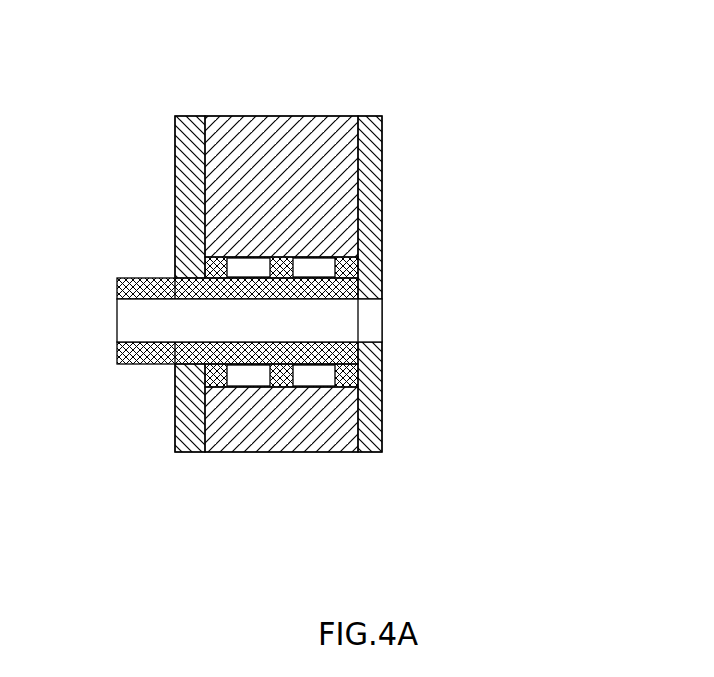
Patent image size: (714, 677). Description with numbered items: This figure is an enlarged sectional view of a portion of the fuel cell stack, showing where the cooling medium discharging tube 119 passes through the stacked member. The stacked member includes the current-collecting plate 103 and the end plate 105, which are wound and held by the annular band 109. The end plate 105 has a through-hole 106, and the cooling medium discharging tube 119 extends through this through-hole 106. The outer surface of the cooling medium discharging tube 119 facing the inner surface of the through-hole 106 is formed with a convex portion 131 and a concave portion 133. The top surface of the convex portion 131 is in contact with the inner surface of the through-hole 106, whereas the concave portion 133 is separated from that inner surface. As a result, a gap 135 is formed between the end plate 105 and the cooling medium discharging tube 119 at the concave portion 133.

The current-collecting plate 103 is at (283, 230).
The end plate 105 is at (351, 186).
The through-hole 106 is at (281, 467).
The annular band 109 is at (187, 248).
The cooling medium discharging tube 119 is at (210, 283).
The convex portion 131 is at (366, 321).
The concave portion 133 is at (281, 157).
The gap 135 is at (366, 379).